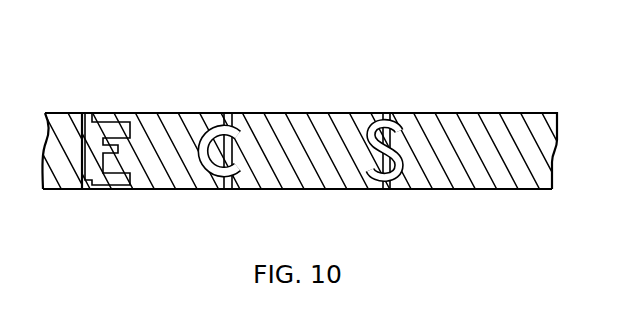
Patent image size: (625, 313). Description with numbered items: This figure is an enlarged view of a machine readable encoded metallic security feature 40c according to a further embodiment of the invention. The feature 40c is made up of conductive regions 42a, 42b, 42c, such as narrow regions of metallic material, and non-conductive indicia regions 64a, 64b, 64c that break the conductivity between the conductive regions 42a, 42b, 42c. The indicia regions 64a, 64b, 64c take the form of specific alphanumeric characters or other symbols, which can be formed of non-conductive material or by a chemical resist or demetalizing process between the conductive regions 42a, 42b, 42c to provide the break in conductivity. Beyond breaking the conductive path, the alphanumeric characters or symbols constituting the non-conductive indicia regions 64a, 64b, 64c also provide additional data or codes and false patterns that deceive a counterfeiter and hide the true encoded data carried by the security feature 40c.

The machine readable encoded metallic security feature 40c is at (433, 83).
The conductive region 42a is at (152, 190).
The conductive region 42b is at (282, 190).
The conductive region 42c is at (490, 188).
The non-conductive indicia region 64a is at (88, 113).
The non-conductive indicia region 64b is at (227, 113).
The non-conductive indicia region 64c is at (385, 190).